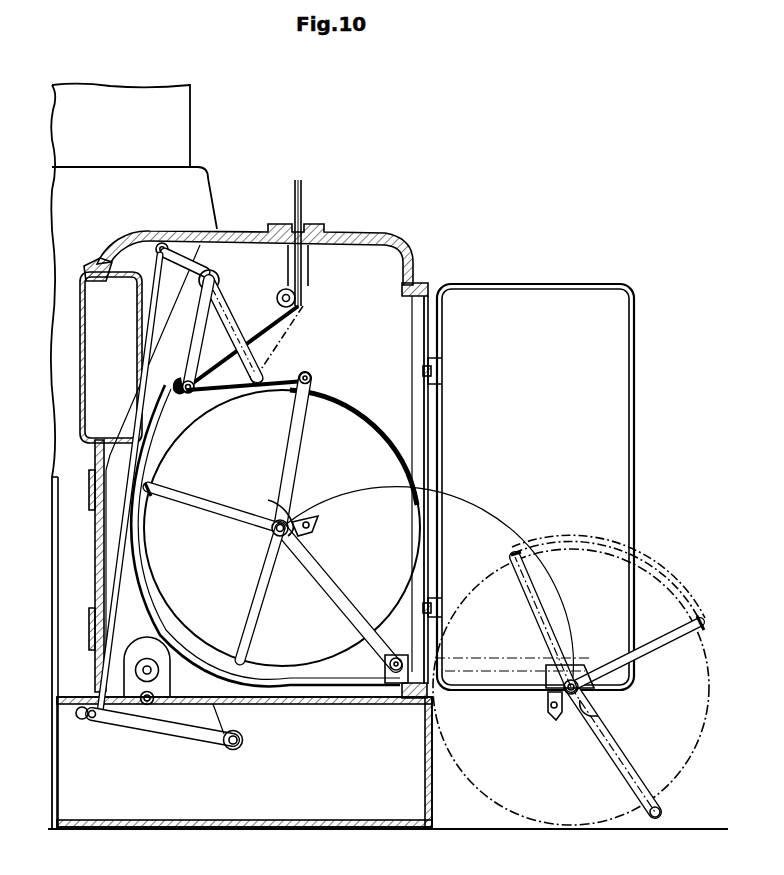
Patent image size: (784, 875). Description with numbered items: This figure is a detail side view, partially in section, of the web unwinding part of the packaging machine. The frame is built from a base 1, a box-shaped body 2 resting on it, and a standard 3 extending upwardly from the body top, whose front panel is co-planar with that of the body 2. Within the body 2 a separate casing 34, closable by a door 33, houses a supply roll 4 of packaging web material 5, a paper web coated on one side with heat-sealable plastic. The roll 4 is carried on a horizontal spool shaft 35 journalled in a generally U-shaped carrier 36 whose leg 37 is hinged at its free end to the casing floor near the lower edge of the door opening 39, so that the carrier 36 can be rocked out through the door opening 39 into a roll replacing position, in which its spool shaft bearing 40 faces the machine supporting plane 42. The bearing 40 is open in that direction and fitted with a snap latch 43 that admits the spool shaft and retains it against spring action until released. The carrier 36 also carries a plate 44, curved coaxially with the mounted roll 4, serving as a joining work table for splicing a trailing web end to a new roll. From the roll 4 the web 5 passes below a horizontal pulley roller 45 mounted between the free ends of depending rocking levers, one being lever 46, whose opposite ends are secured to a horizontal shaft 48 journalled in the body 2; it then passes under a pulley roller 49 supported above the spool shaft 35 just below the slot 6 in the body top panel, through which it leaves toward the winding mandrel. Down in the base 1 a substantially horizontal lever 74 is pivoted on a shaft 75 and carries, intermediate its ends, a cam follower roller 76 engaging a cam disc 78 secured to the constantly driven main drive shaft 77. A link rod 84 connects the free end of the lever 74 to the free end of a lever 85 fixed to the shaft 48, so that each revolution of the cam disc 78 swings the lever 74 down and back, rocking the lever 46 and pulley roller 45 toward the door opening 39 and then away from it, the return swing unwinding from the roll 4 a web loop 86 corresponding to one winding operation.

The base 1 is at (428, 800).
The box-shaped body 2 is at (396, 229).
The standard 3 is at (175, 128).
The supply roll 4 is at (356, 418).
The packaging web material 5 is at (302, 200).
The slot 6 is at (304, 228).
The door 33 is at (575, 302).
The casing 34 is at (396, 268).
The spool shaft 35 is at (289, 520).
The carrier 36 is at (348, 383).
The leg 37 is at (288, 455).
The door opening 39 is at (425, 292).
The spool shaft bearing 40 is at (262, 532).
The machine supporting plane 42 is at (472, 830).
The snap latch 43 is at (310, 532).
The plate 44 is at (138, 538).
The pulley roller 45 is at (186, 392).
The rocking lever 46 is at (141, 483).
The shaft 48 is at (216, 278).
The pulley roller 49 is at (277, 298).
The lever 74 is at (136, 727).
The shaft 75 is at (243, 745).
The cam follower roller 76 is at (166, 697).
The main drive shaft 77 is at (151, 679).
The cam disc 78 is at (145, 648).
The link rod 84 is at (158, 256).
The lever 85 is at (192, 258).
The web loop 86 is at (234, 333).